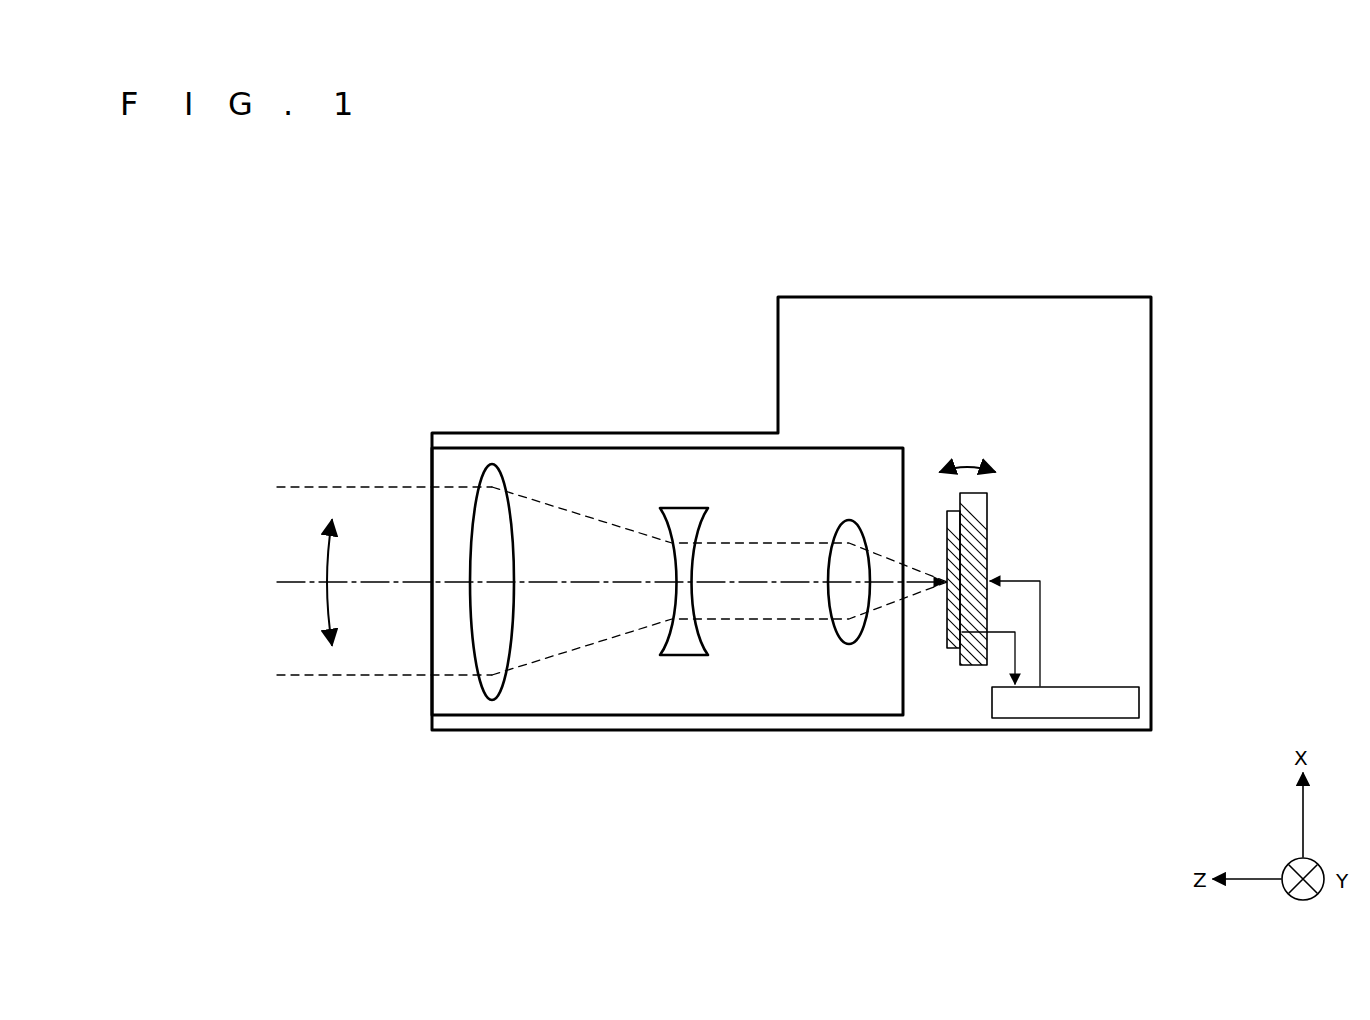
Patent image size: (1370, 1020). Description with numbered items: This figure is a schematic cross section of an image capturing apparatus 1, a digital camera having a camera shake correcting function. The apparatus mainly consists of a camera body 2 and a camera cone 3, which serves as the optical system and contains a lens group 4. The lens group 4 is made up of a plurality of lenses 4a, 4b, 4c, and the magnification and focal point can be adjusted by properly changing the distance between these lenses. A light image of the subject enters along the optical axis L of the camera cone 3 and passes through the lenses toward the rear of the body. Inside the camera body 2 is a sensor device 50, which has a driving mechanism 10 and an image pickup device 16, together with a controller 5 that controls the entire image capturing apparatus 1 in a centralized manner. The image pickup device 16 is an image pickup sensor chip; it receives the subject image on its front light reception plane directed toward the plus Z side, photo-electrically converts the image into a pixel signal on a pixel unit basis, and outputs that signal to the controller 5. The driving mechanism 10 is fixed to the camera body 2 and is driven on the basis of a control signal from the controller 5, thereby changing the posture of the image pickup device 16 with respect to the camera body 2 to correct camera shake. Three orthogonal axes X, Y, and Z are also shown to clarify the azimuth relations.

The image capturing apparatus 1 is at (372, 237).
The body 2 is at (929, 296).
The camera cone 3 is at (523, 447).
The lens group 4 is at (670, 661).
The lens 4a is at (492, 700).
The lens 4b is at (685, 655).
The lens 4c is at (849, 657).
The controller 5 is at (1140, 703).
The driving mechanism 10 is at (987, 547).
The image pickup device 16 is at (947, 511).
The sensor device 50 is at (1102, 551).
The optical axis L is at (380, 580).